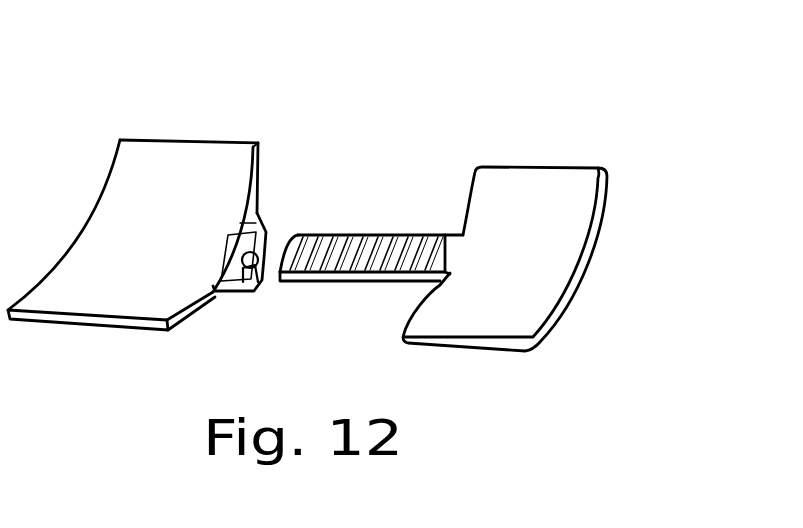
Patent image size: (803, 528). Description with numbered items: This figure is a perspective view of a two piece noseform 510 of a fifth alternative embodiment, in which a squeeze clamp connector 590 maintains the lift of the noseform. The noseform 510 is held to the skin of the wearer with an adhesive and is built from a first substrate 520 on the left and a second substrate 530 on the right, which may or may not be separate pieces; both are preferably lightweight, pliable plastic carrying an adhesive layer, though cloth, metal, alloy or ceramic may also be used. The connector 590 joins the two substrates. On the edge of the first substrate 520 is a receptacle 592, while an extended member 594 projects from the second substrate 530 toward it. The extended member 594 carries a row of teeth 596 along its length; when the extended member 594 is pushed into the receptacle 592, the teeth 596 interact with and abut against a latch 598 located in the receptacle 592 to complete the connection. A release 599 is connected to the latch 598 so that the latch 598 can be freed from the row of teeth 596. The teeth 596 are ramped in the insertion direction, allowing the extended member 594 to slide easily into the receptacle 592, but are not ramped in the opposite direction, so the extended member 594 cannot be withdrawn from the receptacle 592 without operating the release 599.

The two piece noseform 510 is at (530, 143).
The first substrate 520 is at (147, 147).
The second substrate 530 is at (588, 167).
The squeeze clamp connector 590 is at (327, 225).
The receptacle 592 is at (230, 297).
The extended member 594 is at (357, 283).
The row of teeth 596 is at (367, 230).
The latch 598 is at (258, 263).
The release 599 is at (260, 257).